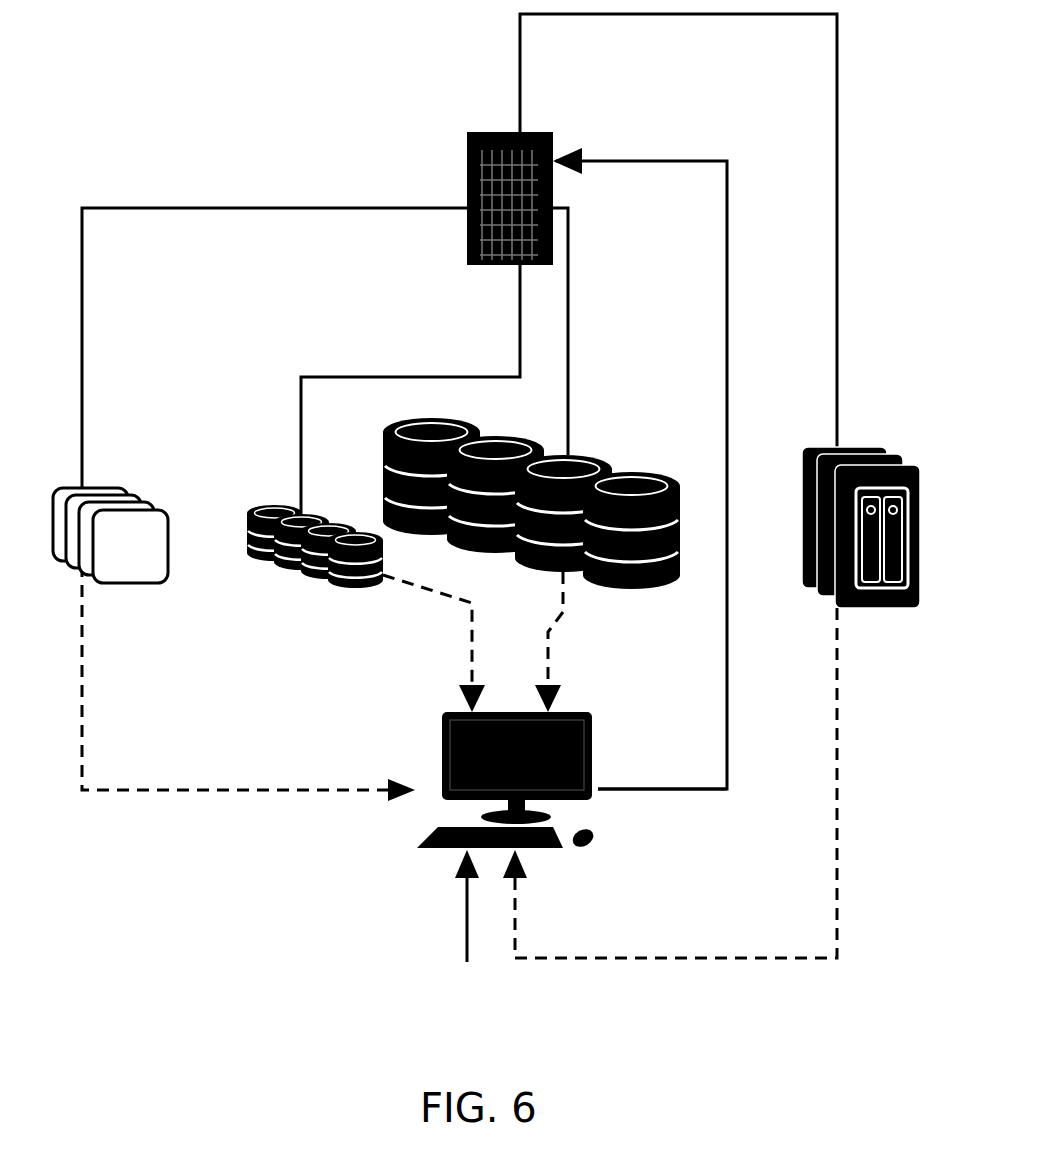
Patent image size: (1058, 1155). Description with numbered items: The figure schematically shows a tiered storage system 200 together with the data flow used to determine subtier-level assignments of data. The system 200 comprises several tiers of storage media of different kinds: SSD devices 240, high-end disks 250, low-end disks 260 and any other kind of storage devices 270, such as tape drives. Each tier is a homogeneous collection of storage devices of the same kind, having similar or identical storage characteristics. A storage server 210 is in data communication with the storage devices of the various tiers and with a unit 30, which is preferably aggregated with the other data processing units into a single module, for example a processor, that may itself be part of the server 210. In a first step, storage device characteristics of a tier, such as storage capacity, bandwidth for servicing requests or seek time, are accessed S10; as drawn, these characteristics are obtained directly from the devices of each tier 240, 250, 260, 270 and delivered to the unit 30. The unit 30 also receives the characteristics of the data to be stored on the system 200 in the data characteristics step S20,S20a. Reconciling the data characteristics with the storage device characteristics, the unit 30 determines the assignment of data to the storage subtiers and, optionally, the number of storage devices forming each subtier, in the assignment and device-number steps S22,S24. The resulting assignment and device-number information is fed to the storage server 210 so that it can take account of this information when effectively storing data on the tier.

The tiered storage system 200 is at (142, 947).
The storage server 210 is at (467, 146).
The SSD devices 240 is at (123, 492).
The high-end disks 250 is at (300, 582).
The low-end disks 260 is at (610, 460).
The other storage devices 270 is at (877, 447).
The unit 30 is at (447, 855).
The accessing storage device characteristics S10 is at (460, 603).
The characteristics of data to be stored S20,S20a is at (460, 955).
The determining data assignment and number of devices S22,S24 is at (672, 792).